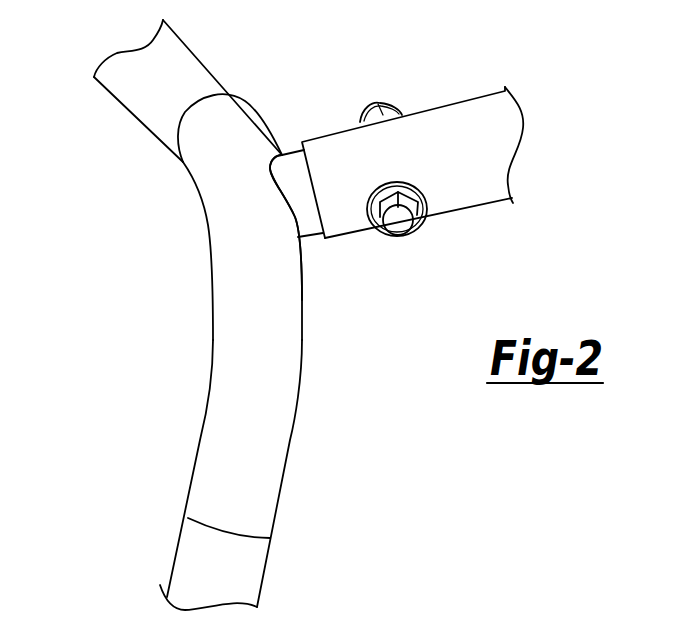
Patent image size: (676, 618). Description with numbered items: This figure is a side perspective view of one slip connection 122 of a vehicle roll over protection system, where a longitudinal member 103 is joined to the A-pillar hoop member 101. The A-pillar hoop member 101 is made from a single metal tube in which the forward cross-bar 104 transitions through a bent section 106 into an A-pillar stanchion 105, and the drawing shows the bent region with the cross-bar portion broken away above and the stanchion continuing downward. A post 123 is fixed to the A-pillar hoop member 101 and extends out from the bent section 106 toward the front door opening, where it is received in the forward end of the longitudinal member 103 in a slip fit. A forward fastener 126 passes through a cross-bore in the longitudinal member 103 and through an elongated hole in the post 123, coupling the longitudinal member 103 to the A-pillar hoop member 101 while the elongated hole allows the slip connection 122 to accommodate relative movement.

The A-pillar hoop member 101 is at (199, 463).
The longitudinal member 103 is at (472, 212).
The forward cross-bar 104 is at (165, 103).
The A-pillar stanchion 105 is at (202, 555).
The bent section 106 is at (227, 208).
The slip connection 122 is at (292, 117).
The post 123 is at (298, 185).
The forward fastener 126 is at (402, 220).